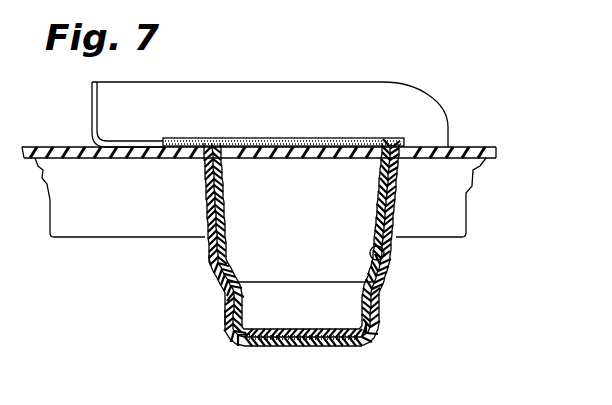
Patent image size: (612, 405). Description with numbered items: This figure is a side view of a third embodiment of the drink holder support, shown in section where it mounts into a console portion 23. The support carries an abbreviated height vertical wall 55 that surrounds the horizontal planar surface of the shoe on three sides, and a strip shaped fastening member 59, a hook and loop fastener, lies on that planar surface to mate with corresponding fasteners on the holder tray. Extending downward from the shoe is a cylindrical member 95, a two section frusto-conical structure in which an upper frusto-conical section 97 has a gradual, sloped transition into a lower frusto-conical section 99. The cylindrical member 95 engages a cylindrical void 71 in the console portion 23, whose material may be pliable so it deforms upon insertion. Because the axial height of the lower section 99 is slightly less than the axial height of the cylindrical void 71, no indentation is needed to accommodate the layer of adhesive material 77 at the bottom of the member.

The console portion 23 is at (488, 192).
The vertical wall 55 is at (90, 108).
The strip shaped fastening member 59 is at (393, 138).
The cylindrical member 95 is at (318, 233).
The upper frusto-conical section 97 is at (213, 262).
The lower frusto-conical section 99 is at (226, 318).
The layer of adhesive material 77 is at (346, 338).
The cylindrical void 71 is at (386, 264).